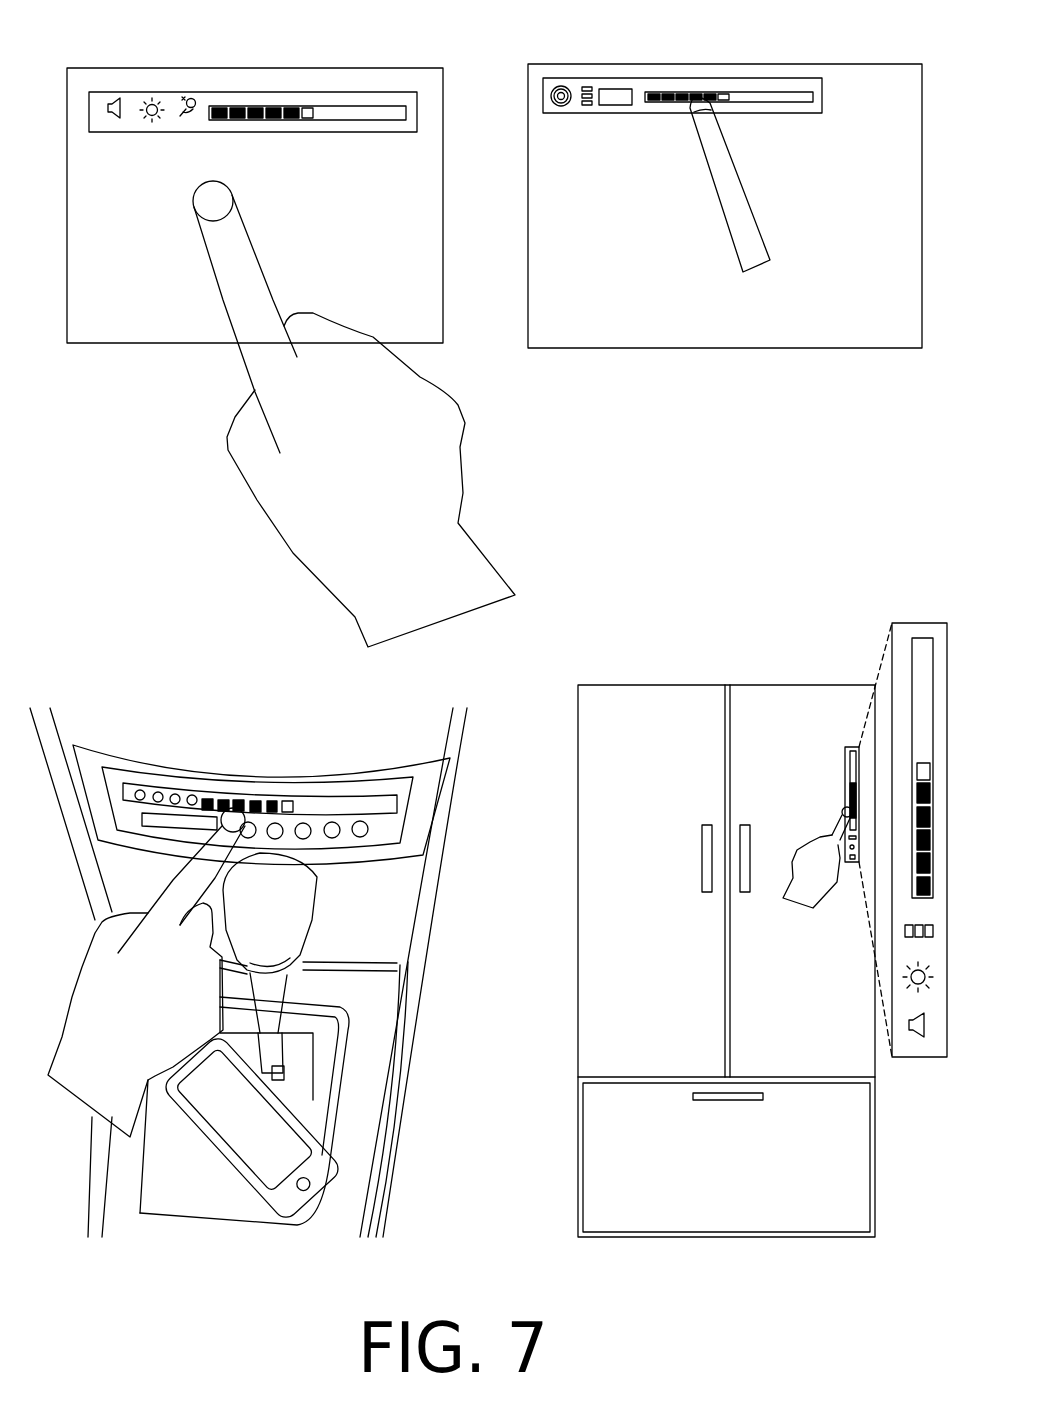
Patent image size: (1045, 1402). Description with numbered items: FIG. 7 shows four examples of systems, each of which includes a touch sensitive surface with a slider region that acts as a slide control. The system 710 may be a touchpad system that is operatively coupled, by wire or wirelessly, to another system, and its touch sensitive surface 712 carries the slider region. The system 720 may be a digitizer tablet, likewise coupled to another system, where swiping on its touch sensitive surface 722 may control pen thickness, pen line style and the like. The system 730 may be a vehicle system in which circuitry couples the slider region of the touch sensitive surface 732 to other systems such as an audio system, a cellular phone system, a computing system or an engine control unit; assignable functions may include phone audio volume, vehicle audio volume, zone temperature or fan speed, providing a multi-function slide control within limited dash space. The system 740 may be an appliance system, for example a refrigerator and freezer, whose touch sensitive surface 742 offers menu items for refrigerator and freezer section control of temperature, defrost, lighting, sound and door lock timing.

The touchpad system 710 is at (161, 38).
The touch sensitive surface 712 is at (317, 132).
The digitizer tablet system 720 is at (592, 38).
The touch sensitive surface 722 is at (760, 112).
The vehicle system 730 is at (129, 637).
The touch sensitive surface 732 is at (215, 795).
The appliance system 740 is at (673, 637).
The touch sensitive surface 742 is at (908, 637).